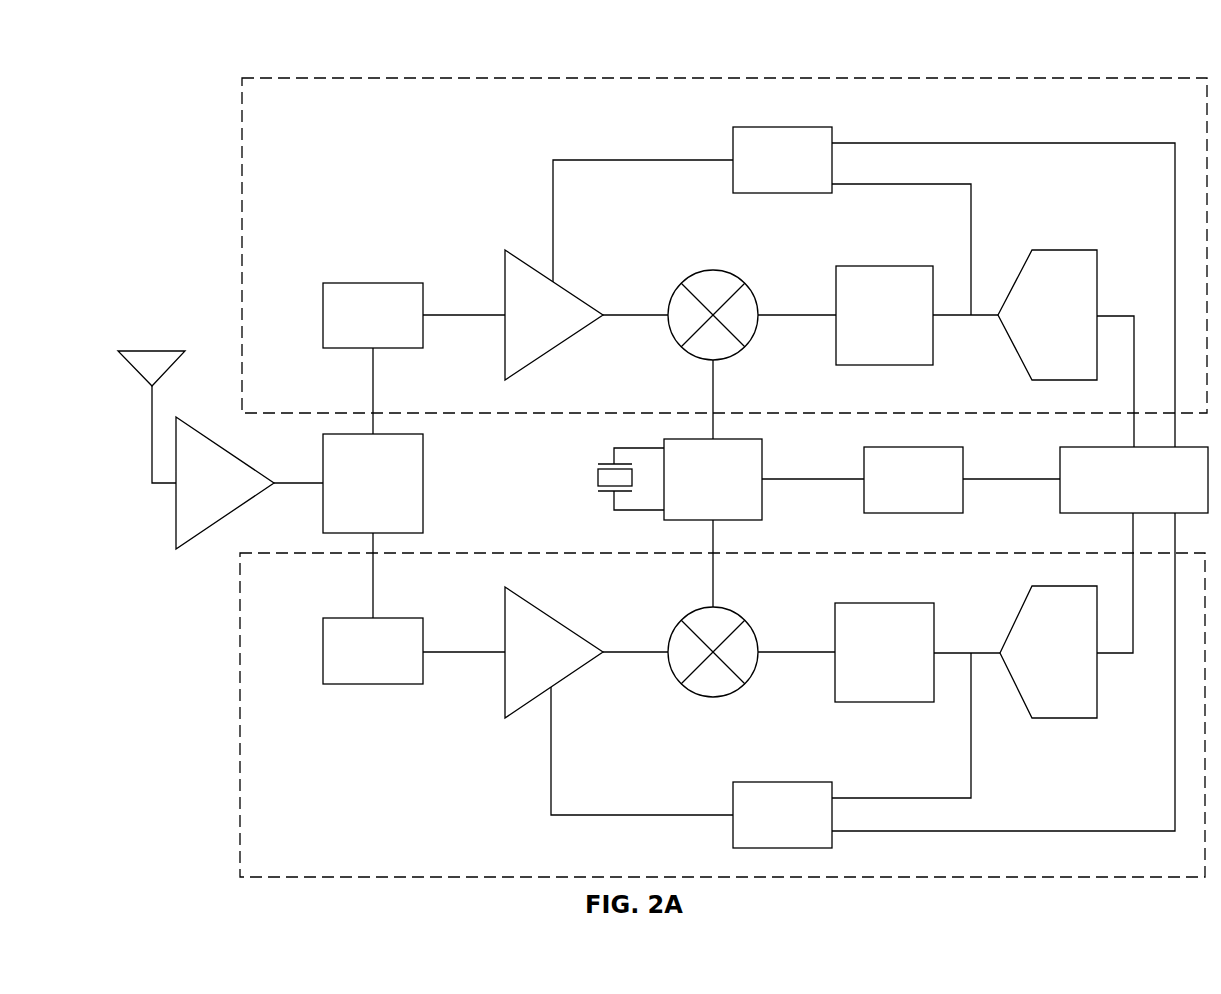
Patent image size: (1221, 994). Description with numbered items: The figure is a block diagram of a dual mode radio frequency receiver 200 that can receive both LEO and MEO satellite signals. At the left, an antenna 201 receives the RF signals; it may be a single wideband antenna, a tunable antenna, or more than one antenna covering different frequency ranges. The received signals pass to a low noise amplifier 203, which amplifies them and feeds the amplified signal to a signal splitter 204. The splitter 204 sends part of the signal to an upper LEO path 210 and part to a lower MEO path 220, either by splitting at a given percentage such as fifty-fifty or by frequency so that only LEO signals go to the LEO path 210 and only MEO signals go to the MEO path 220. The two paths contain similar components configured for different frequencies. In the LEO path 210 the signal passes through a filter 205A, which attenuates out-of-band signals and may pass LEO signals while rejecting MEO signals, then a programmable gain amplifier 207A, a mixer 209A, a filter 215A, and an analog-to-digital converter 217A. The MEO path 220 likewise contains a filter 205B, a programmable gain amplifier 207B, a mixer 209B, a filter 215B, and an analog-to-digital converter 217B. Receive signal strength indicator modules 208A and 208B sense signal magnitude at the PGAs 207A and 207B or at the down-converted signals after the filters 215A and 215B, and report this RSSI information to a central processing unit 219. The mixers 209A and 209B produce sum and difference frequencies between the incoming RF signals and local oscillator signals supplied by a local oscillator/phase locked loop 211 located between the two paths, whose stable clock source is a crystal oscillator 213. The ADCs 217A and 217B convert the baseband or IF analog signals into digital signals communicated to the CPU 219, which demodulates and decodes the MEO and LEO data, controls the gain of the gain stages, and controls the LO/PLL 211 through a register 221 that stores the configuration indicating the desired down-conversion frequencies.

The receiver 200 is at (163, 70).
The antenna 201 is at (134, 343).
The low noise amplifier 203 is at (187, 506).
The signal splitter 204 is at (355, 506).
The filter 205A is at (349, 338).
The filter 205B is at (349, 675).
The programmable gain amplifier 207A is at (511, 338).
The programmable gain amplifier 207B is at (511, 680).
The receive signal strength indicator module 208A is at (758, 183).
The receive signal strength indicator module 208B is at (758, 840).
The mixer 209A is at (710, 261).
The mixer 209B is at (666, 684).
The LEO path 210 is at (439, 190).
The local oscillator/phase locked loop 211 is at (695, 503).
The crystal oscillator 213 is at (542, 498).
The filter 215A is at (861, 338).
The filter 215B is at (861, 678).
The analog-to-digital converter 217A is at (1038, 343).
The analog-to-digital converter 217B is at (1038, 683).
The central processing unit 219 is at (1181, 489).
The MEO path 220 is at (447, 793).
The register 221 is at (896, 503).